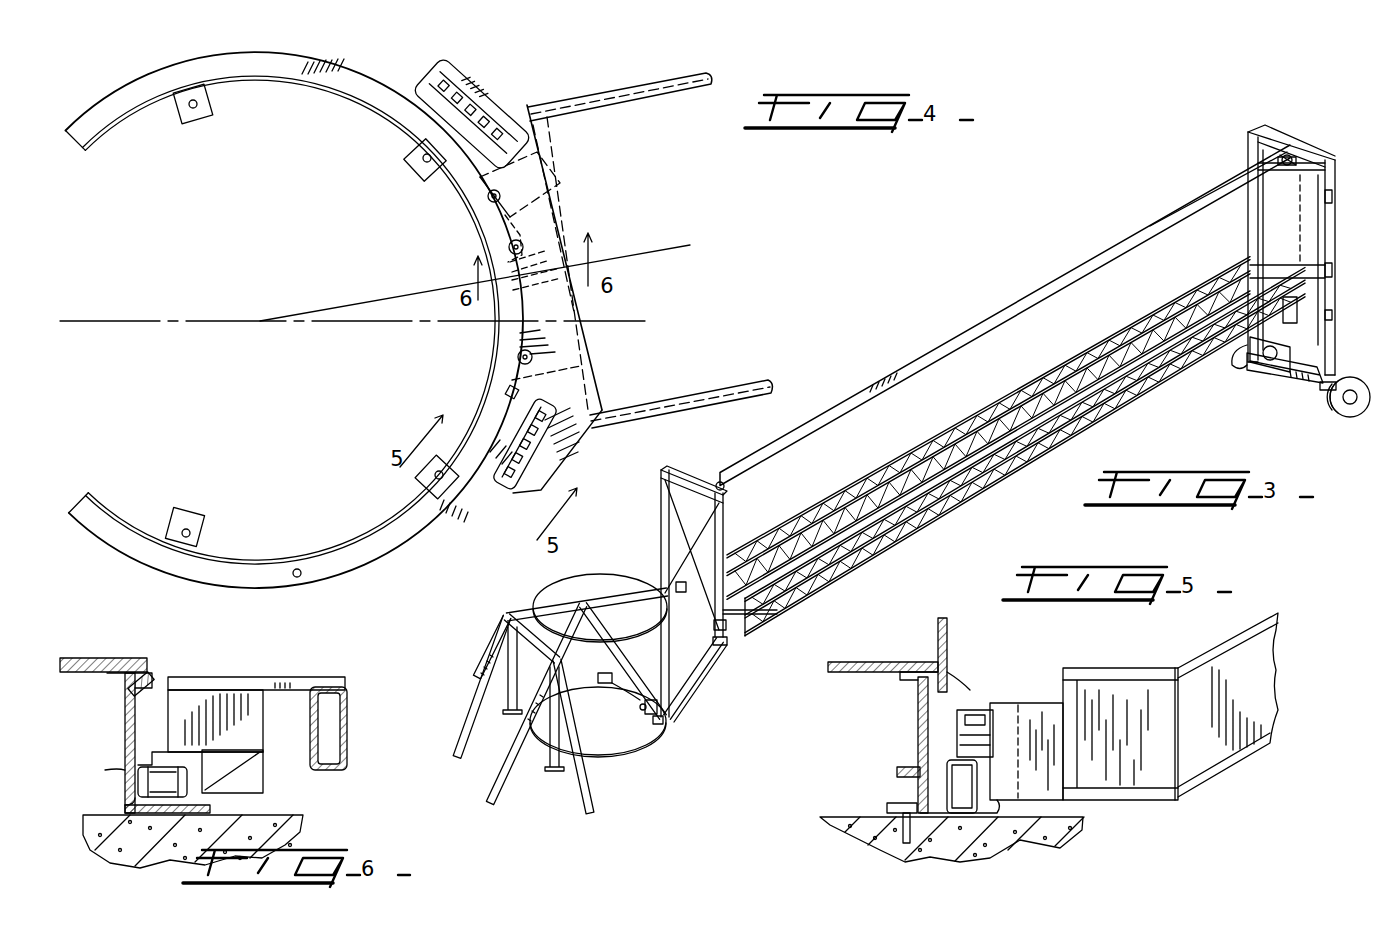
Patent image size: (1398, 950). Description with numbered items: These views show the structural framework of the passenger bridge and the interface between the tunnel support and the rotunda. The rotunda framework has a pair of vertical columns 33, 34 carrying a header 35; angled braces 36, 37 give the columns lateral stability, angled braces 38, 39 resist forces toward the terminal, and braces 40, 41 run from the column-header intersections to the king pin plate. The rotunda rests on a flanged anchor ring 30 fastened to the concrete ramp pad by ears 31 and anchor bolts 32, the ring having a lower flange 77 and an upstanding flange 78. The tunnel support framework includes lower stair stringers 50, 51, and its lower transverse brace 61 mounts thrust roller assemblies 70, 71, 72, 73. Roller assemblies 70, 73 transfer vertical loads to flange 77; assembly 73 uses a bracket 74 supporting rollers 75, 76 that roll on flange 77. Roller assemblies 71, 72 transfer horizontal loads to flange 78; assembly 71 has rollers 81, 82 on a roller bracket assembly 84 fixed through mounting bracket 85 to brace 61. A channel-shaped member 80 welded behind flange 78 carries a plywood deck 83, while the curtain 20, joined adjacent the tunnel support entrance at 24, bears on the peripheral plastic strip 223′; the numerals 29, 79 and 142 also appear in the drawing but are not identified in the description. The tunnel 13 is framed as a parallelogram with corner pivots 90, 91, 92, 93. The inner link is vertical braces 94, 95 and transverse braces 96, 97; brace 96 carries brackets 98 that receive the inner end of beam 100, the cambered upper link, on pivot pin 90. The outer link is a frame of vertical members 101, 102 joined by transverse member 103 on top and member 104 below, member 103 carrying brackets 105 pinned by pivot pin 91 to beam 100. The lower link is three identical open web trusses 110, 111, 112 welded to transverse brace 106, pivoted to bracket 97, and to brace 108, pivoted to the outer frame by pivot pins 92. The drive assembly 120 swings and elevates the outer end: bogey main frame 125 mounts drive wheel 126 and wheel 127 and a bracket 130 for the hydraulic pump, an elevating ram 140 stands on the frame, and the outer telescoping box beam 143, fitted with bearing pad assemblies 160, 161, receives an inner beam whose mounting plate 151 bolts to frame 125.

In FIG. 3, the tunnel 13 is at (951, 331).
In FIG. 5, the movable curtain 20 is at (948, 650).
In FIG. 3, the curtain joint at tunnel support entrance 24 is at (661, 723).
In FIG. 4, the hole 29 is at (300, 515).
In FIG. 6, the hole 29 is at (292, 818).
In FIG. 5, the hole 29 is at (838, 820).
In FIG. 4, the anchor ring 30 is at (413, 538).
In FIG. 6, the anchor ring 30 is at (165, 825).
In FIG. 5, the anchor ring 30 is at (930, 830).
In FIG. 4, the ears 31 is at (200, 524).
In FIG. 5, the ears 31 is at (887, 808).
In FIG. 4, the anchor bolts 32 is at (187, 528).
In FIG. 5, the anchor bolts 32 is at (906, 810).
In FIG. 3, the vertical column 33 is at (507, 712).
In FIG. 3, the vertical column 34 is at (553, 768).
In FIG. 3, the header 35 is at (506, 616).
In FIG. 3, the angled brace 36 is at (485, 660).
In FIG. 3, the angled brace 37 is at (598, 788).
In FIG. 3, the angled brace 38 is at (464, 726).
In FIG. 3, the angled brace 39 is at (497, 772).
In FIG. 3, the brace 40 is at (561, 603).
In FIG. 3, the brace 41 is at (572, 642).
In FIG. 3, the lower stair stringer 50 is at (634, 692).
In FIG. 3, the lower stair stringer 51 is at (690, 695).
In FIG. 5, the lower stair stringer 51 is at (1205, 655).
In FIG. 4, the lower transverse brace 61 is at (603, 401).
In FIG. 3, the lower transverse brace 61 is at (653, 702).
In FIG. 6, the lower transverse brace 61 is at (348, 728).
In FIG. 5, the lower transverse brace 61 is at (1063, 676).
In FIG. 4, the thrust roller assembly 70 is at (414, 131).
In FIG. 3, the thrust roller assembly 70 is at (600, 680).
In FIG. 4, the thrust roller assembly 71 is at (513, 228).
In FIG. 3, the thrust roller assembly 71 is at (618, 690).
In FIG. 4, the thrust roller assembly 72 is at (520, 340).
In FIG. 3, the thrust roller assembly 72 is at (640, 706).
In FIG. 4, the thrust roller assembly 73 is at (412, 163).
In FIG. 3, the thrust roller assembly 73 is at (651, 716).
In FIG. 5, the thrust roller assembly 73 is at (1020, 657).
In FIG. 5, the bracket 74 is at (1018, 702).
In FIG. 4, the roller 75 is at (491, 450).
In FIG. 5, the roller 75 is at (962, 815).
In FIG. 4, the roller 76 is at (508, 391).
In FIG. 5, the lower flange 77 is at (997, 815).
In FIG. 4, the upstanding flange 78 is at (445, 500).
In FIG. 6, the upstanding flange 78 is at (127, 692).
In FIG. 5, the upstanding flange 78 is at (930, 715).
In FIG. 6, the foot flange 79 is at (104, 772).
In FIG. 5, the foot flange 79 is at (896, 772).
In FIG. 6, the channel-shaped member 80 is at (124, 725).
In FIG. 5, the channel-shaped member 80 is at (917, 725).
In FIG. 4, the roller 81 is at (500, 250).
In FIG. 6, the roller 81 is at (140, 785).
In FIG. 4, the roller 82 is at (484, 203).
In FIG. 6, the plywood deck 83 is at (120, 660).
In FIG. 5, the plywood deck 83 is at (905, 662).
In FIG. 6, the roller bracket assembly 84 is at (258, 760).
In FIG. 6, the mounting bracket 85 is at (253, 677).
In FIG. 3, the pivot pin 90 is at (699, 576).
In FIG. 3, the pivot pin 91 is at (1287, 152).
In FIG. 3, the pivot pins 92 is at (1305, 250).
In FIG. 3, the pivot 93 is at (684, 585).
In FIG. 3, the vertical brace 94 is at (724, 556).
In FIG. 3, the vertical brace 95 is at (670, 545).
In FIG. 3, the transverse brace 96 is at (696, 478).
In FIG. 3, the transverse brace 97 is at (703, 677).
In FIG. 3, the brackets 98 is at (726, 487).
In FIG. 3, the beam 100 is at (1005, 315).
In FIG. 3, the vertical member 101 is at (1281, 233).
In FIG. 3, the vertical member 102 is at (1248, 215).
In FIG. 3, the transverse member 103 is at (1292, 158).
In FIG. 3, the member 104 is at (1300, 263).
In FIG. 3, the brackets 105 is at (1287, 173).
In FIG. 3, the transverse brace 106 is at (722, 645).
In FIG. 3, the brace 108 is at (1246, 270).
In FIG. 3, the open web truss 110 is at (940, 520).
In FIG. 3, the open web truss 111 is at (815, 520).
In FIG. 3, the open web truss 112 is at (988, 428).
In FIG. 3, the drive assembly 120 is at (1287, 381).
In FIG. 3, the main frame 125 is at (1300, 355).
In FIG. 3, the drive wheel 126 is at (1238, 362).
In FIG. 3, the wheel 127 is at (1346, 417).
In FIG. 3, the bracket 130 is at (1282, 386).
In FIG. 3, the elevating ram 140 is at (1298, 304).
In FIG. 3, the rod 142 is at (1243, 165).
In FIG. 3, the outer telescoping box beam 143 is at (1338, 290).
In FIG. 3, the mounting plate 151 is at (1333, 384).
In FIG. 3, the upper bearing pad assembly 160 is at (1336, 203).
In FIG. 3, the lower bearing pad assembly 161 is at (1336, 256).
In FIG. 6, the peripheral plastic bearing strip 223′ is at (150, 678).
In FIG. 5, the peripheral plastic bearing strip 223′ is at (955, 688).